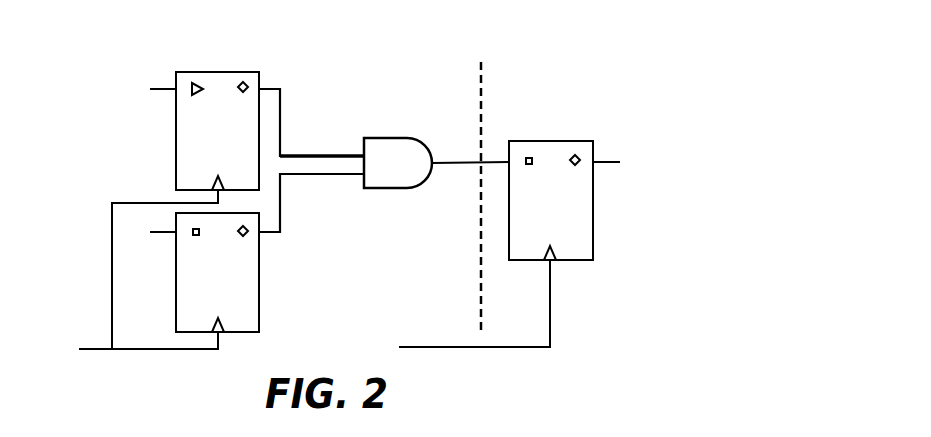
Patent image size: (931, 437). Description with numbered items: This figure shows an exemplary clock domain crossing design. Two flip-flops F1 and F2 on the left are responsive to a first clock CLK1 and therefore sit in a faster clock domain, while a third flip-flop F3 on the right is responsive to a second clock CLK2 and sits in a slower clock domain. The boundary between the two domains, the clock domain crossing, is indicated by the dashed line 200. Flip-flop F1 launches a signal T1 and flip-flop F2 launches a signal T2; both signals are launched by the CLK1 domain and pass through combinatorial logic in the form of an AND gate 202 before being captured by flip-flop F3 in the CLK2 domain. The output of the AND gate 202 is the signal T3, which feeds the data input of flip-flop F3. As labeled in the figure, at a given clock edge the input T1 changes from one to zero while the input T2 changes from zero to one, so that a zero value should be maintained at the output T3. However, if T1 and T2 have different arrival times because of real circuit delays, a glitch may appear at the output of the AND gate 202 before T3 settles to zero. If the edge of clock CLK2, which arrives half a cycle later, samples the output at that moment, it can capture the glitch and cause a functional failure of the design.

The clock domain crossing line 200 is at (482, 113).
The AND gate 202 is at (375, 138).
The flip-flop F1 is at (204, 131).
The flip-flop F2 is at (204, 272).
The flip-flop F3 is at (564, 200).
The signal T1 is at (333, 114).
The signal T2 is at (328, 196).
The AND gate output T3 is at (470, 147).
The clock CLK1 is at (135, 270).
The clock CLK2 is at (466, 303).